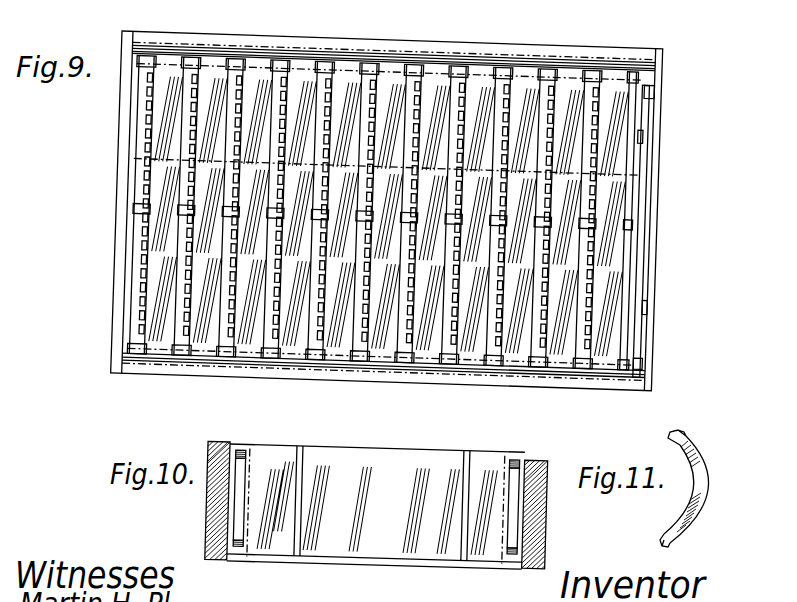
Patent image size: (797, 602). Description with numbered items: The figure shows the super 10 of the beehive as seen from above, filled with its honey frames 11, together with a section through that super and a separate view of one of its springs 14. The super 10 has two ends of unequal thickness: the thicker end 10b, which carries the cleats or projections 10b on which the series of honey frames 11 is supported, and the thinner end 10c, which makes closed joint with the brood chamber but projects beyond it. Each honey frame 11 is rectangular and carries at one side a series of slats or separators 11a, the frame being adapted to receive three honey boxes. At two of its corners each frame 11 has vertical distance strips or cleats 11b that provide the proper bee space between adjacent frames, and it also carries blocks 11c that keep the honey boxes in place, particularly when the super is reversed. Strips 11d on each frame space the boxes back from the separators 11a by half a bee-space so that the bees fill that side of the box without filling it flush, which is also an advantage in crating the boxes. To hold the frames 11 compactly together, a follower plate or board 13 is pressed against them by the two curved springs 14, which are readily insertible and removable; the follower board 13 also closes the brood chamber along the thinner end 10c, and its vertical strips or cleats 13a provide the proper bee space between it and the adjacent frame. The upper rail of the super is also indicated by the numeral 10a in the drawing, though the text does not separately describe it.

In FIG. 9, the super 10 is at (395, 42).
In FIG. 10, the super 10 is at (549, 464).
In FIG. 9, the frame rail 10a is at (445, 52).
In FIG. 9, the thicker end of super 10b is at (122, 152).
In FIG. 10, the thicker end of super 10b is at (283, 444).
In FIG. 9, the thinner end of super 10c is at (664, 162).
In FIG. 9, the honey frame 11 is at (243, 358).
In FIG. 9, the slats or separators 11a is at (497, 344).
In FIG. 9, the vertical distance strips or cleats 11b is at (237, 60).
In FIG. 9, the blocks 11c is at (669, 252).
In FIG. 9, the strips 11d is at (673, 285).
In FIG. 9, the follower plate or board 13 is at (636, 224).
In FIG. 10, the follower plate or board 13 is at (357, 464).
In FIG. 9, the vertical strips or cleats 13a is at (658, 83).
In FIG. 10, the vertical strips or cleats 13a is at (252, 455).
In FIG. 10, the curved springs 14 is at (241, 514).
In FIG. 11, the curved springs 14 is at (698, 460).